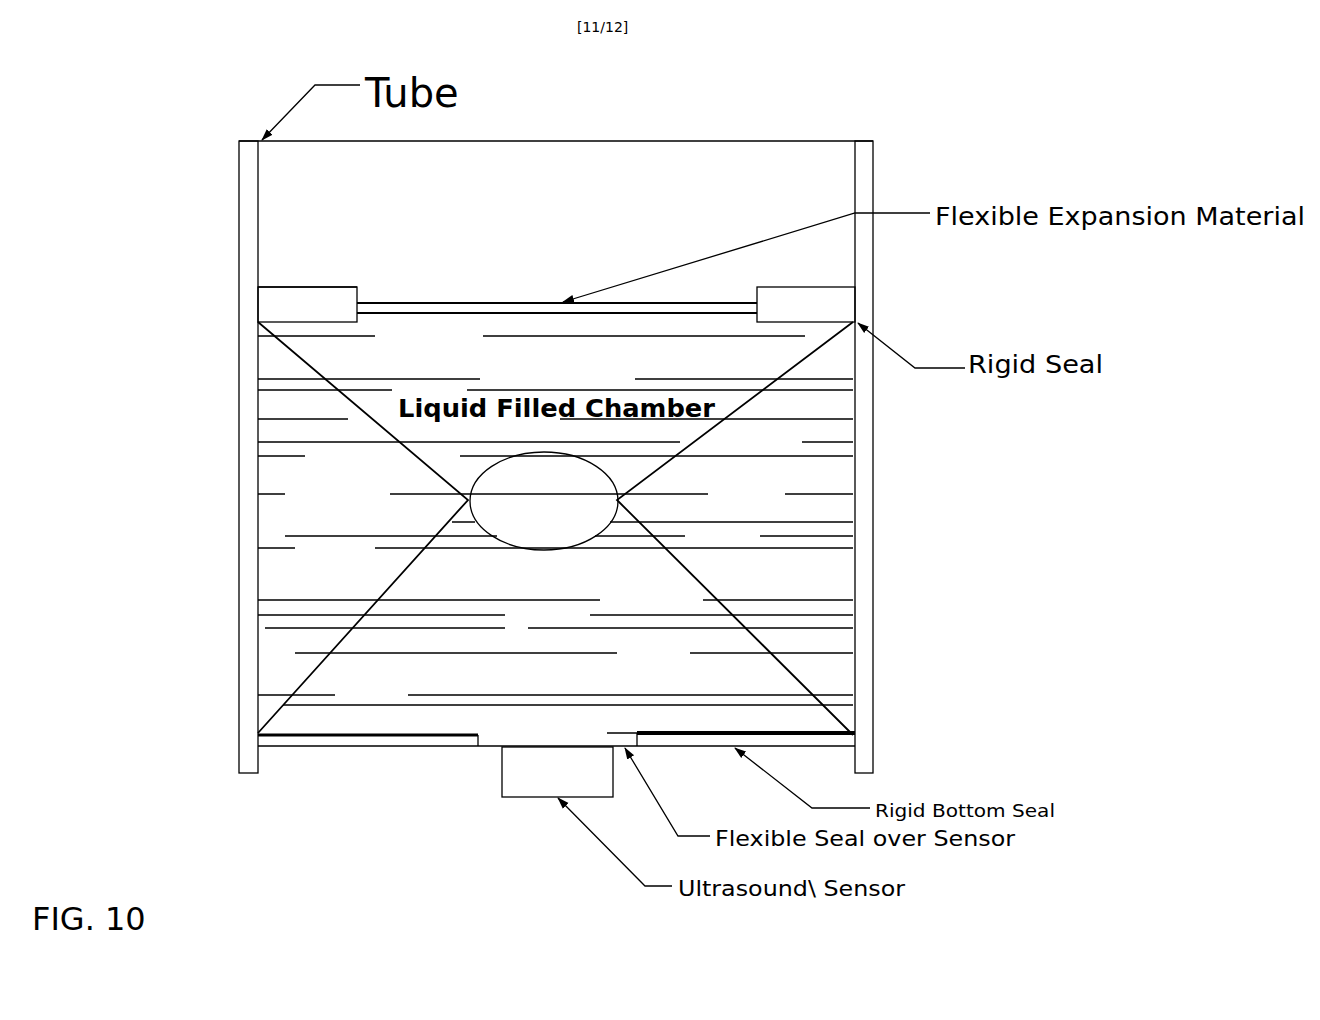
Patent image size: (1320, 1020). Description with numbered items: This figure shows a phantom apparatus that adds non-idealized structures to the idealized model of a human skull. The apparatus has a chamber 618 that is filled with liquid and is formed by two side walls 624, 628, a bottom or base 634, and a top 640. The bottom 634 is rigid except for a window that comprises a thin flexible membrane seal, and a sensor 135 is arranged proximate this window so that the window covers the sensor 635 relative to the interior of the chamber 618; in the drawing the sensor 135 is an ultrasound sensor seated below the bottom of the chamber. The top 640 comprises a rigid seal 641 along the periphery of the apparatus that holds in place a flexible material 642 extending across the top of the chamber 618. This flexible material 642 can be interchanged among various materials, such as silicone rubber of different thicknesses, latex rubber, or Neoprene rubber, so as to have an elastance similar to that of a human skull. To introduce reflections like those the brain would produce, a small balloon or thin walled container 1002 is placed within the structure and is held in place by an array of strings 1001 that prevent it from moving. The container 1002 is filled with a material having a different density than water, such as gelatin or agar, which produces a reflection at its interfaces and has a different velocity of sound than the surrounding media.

The chamber 618 is at (568, 176).
The side wall 628 is at (875, 160).
The side wall 624 is at (236, 362).
The top 640 is at (333, 250).
The flexible material 642 is at (457, 295).
The rigid seal 641 is at (556, 304).
The array of strings 1001 is at (400, 440).
The small balloon or thin walled container 1002 is at (544, 501).
The bottom 634 is at (378, 748).
The sensor 635 is at (488, 748).
The sensor 135 is at (557, 772).